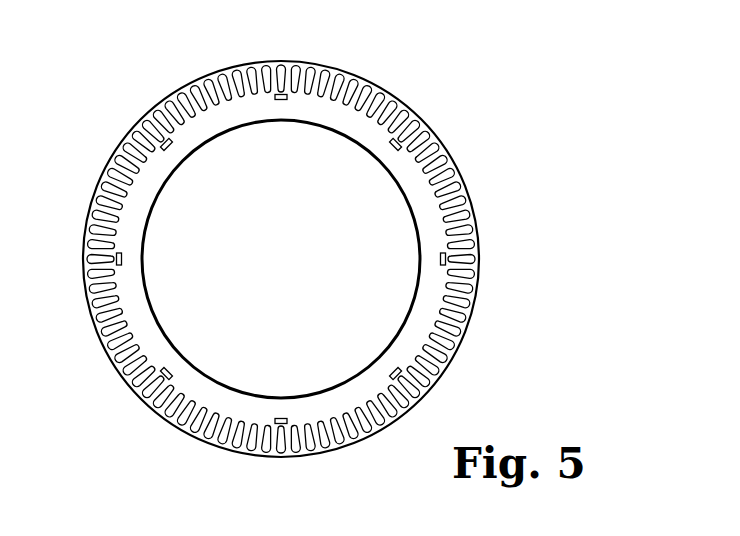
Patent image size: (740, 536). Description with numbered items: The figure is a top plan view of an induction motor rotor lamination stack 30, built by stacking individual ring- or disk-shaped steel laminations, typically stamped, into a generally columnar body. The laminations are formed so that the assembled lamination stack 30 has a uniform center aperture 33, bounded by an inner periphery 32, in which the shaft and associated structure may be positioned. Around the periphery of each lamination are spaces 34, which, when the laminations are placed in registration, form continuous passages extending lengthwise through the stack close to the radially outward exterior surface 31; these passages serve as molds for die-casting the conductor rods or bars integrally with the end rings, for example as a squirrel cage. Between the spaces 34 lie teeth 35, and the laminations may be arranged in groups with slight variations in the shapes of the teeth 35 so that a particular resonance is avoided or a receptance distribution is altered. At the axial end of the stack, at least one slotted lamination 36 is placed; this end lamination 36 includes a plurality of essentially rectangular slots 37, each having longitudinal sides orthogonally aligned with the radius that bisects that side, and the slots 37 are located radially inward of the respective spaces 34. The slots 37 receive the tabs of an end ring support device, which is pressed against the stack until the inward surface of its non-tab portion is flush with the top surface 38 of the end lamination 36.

The lamination stack 30 is at (500, 191).
The radially outward exterior surface 31 is at (242, 64).
The inner periphery / bore surface 32 is at (307, 122).
The center aperture 33 is at (292, 262).
The spaces 34 is at (378, 92).
The teeth 35 is at (422, 128).
The slotted lamination 36 is at (479, 264).
The slots 37 is at (281, 100).
The top surface 38 is at (140, 210).